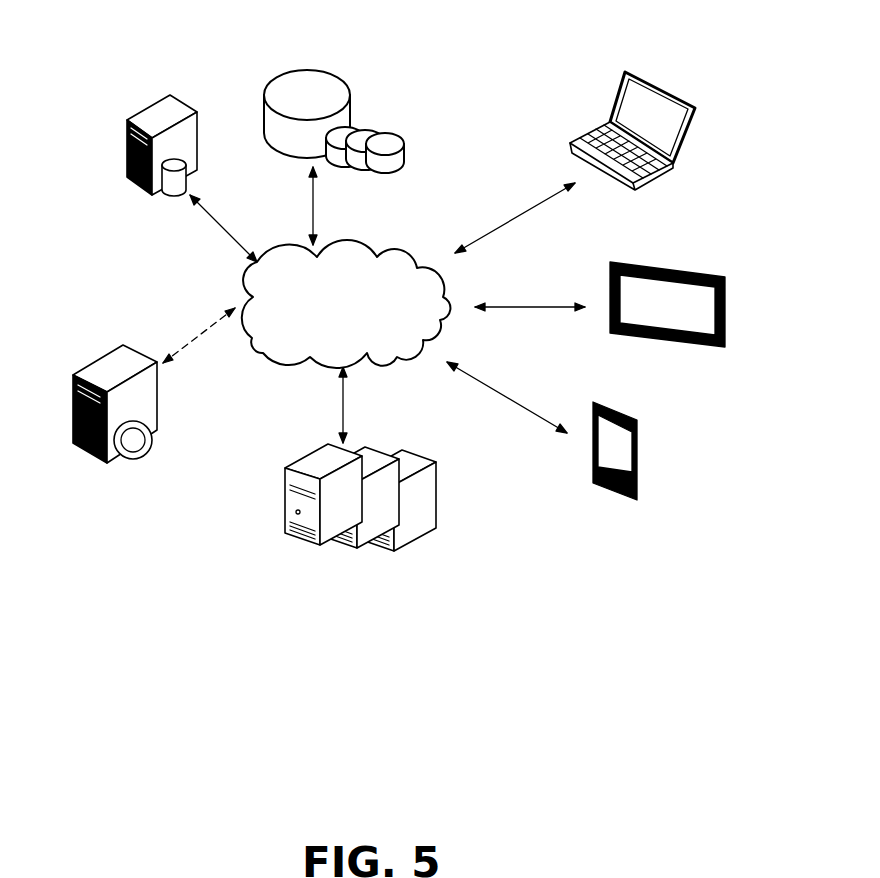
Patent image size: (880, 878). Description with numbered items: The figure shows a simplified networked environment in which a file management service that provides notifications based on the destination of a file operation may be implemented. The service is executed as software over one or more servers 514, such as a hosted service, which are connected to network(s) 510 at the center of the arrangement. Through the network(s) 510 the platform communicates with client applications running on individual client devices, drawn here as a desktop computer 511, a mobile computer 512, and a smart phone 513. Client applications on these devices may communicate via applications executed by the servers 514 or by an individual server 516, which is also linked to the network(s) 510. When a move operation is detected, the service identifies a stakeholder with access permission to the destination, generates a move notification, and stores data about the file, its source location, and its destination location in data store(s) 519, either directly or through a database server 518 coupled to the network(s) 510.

The network(s) 510 is at (348, 232).
The desktop computer 511 is at (665, 72).
The mobile computer 512 is at (698, 248).
The smart phone 513 is at (643, 420).
The servers 514 is at (310, 448).
The individual server 516 is at (97, 353).
The database server 518 is at (162, 202).
The data store(s) 519 is at (322, 50).